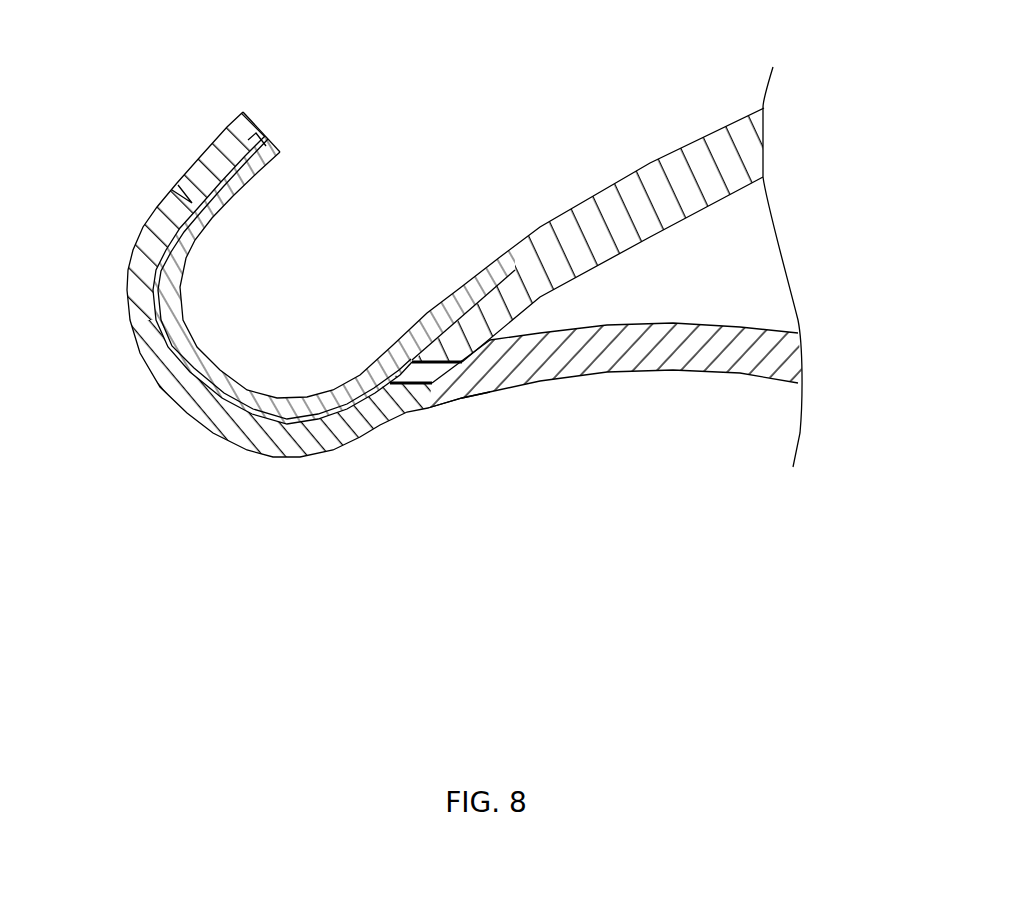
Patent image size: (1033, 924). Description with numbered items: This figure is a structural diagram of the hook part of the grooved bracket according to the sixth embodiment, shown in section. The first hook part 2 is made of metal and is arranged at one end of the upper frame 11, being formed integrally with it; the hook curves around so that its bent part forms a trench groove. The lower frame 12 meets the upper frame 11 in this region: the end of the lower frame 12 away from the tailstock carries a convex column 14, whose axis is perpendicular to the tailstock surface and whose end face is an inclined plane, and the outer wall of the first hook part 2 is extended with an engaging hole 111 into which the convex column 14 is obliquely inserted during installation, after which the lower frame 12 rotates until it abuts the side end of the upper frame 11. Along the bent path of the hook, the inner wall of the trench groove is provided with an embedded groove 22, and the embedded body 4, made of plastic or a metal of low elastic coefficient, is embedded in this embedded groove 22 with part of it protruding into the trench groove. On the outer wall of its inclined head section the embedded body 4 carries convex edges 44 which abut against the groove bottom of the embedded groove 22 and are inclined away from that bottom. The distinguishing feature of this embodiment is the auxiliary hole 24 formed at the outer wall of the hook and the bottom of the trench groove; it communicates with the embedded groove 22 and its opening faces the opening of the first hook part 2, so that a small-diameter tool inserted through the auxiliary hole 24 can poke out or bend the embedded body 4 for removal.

The first hook part 2 is at (228, 430).
The embedded body 4 is at (283, 400).
The upper frame 11 is at (647, 198).
The lower frame 12 is at (650, 360).
The convex column 14 is at (460, 398).
The engaging hole 111 is at (405, 405).
The embedded groove 22 is at (178, 188).
The auxiliary hole 24 is at (163, 421).
The convex edge 44 is at (226, 132).